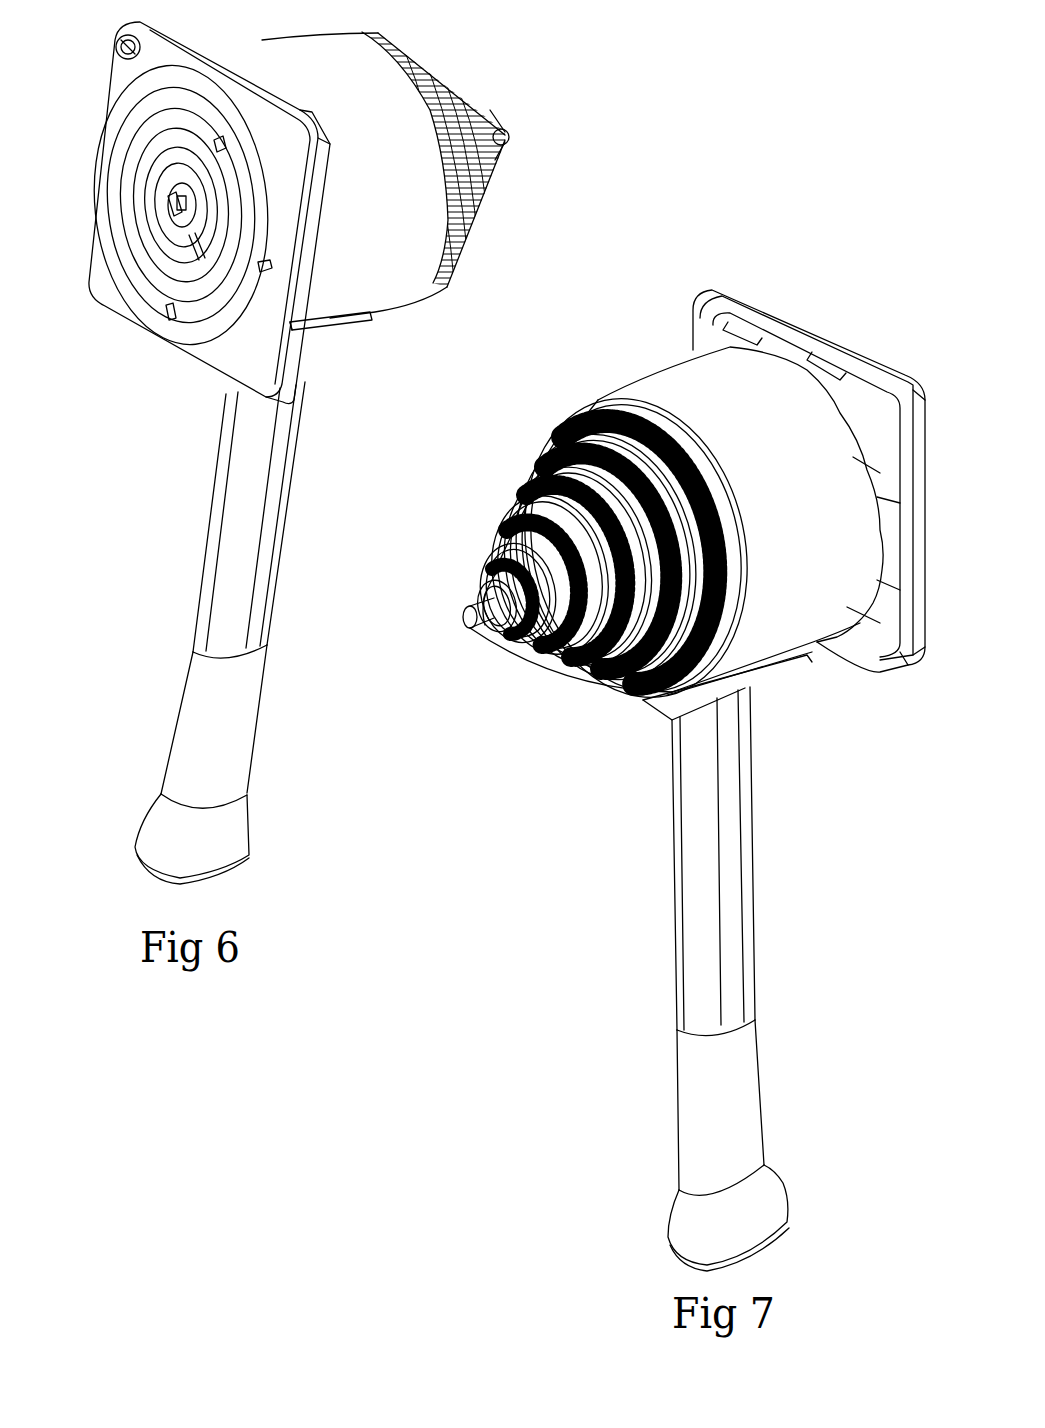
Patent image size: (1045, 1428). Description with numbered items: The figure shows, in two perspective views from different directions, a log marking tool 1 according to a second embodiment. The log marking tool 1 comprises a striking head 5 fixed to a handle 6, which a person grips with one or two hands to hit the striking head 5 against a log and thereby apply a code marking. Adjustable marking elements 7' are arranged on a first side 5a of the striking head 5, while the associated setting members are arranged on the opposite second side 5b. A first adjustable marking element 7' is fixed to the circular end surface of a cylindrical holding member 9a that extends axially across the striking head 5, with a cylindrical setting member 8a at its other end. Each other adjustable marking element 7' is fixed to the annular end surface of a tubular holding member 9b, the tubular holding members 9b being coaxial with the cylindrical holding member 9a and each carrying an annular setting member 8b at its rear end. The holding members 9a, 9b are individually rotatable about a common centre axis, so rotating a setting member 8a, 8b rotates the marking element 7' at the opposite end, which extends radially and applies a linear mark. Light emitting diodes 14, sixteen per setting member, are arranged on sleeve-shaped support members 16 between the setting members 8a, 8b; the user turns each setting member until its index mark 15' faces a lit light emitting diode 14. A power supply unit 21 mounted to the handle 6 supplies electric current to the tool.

In FIG. 6, the log marking tool 1 is at (480, 76).
In FIG. 7, the log marking tool 1 is at (545, 735).
In FIG. 6, the striking head 5 is at (380, 290).
In FIG. 7, the striking head 5 is at (662, 380).
In FIG. 6, the first side of the striking head 5a is at (110, 272).
In FIG. 7, the first side of the striking head 5a is at (830, 330).
In FIG. 6, the second side of the striking head 5b is at (462, 252).
In FIG. 7, the second side of the striking head 5b is at (556, 676).
In FIG. 6, the handle 6 is at (262, 558).
In FIG. 7, the handle 6 is at (725, 865).
In FIG. 6, the adjustable marking element 7' is at (207, 261).
In FIG. 6, the cylindrical setting member 8a is at (505, 132).
In FIG. 7, the cylindrical setting member 8a is at (488, 630).
In FIG. 6, the annular setting member 8b is at (503, 158).
In FIG. 7, the annular setting member 8b is at (700, 475).
In FIG. 6, the cylindrical holding member 9a is at (178, 200).
In FIG. 6, the tubular holding member 9b is at (258, 288).
In FIG. 7, the light emitting diode 14 is at (545, 445).
In FIG. 7, the index mark 15' is at (460, 577).
In FIG. 7, the sleeve-shaped support member 16 is at (548, 490).
In FIG. 6, the power supply unit 21 is at (232, 838).
In FIG. 7, the power supply unit 21 is at (770, 1195).